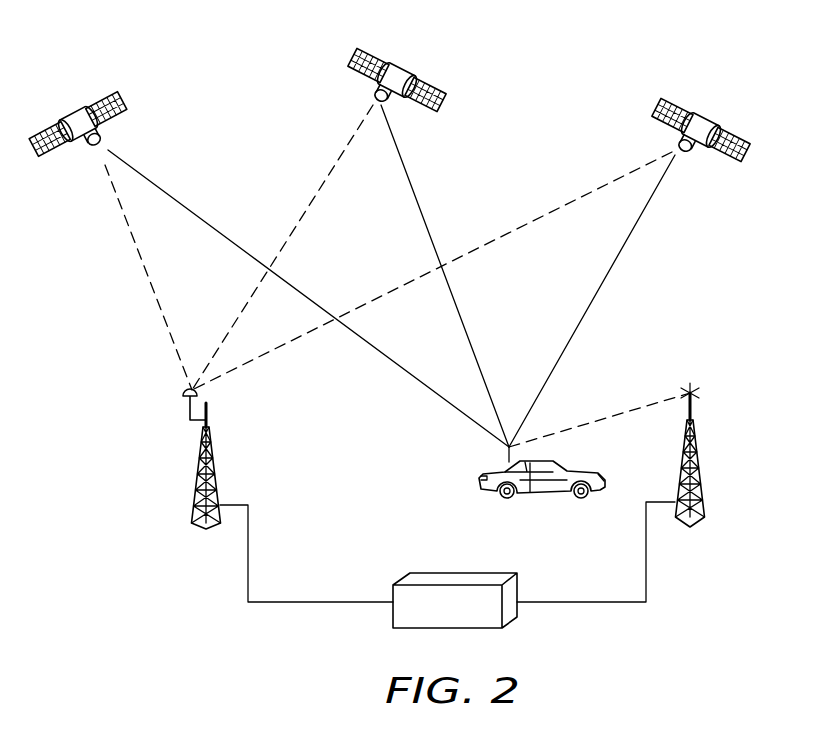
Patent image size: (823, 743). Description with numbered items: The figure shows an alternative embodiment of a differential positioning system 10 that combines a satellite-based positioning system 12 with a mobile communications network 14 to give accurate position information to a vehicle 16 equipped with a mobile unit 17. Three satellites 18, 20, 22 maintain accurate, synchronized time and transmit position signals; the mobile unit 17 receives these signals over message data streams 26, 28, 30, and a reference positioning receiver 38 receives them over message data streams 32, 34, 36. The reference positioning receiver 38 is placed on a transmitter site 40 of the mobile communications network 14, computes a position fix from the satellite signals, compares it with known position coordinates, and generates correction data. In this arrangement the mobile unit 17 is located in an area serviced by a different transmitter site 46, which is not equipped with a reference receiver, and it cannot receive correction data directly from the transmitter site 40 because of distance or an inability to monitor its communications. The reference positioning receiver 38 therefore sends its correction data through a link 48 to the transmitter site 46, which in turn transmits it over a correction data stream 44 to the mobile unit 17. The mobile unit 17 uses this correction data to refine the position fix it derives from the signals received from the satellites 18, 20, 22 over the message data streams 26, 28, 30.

The differential positioning system 10 is at (632, 34).
The satellite-based positioning system 12 is at (752, 251).
The mobile communications network 14 is at (138, 514).
The vehicle 16 is at (547, 495).
The mobile unit 17 is at (500, 463).
The satellite 18 is at (70, 119).
The satellite 20 is at (405, 73).
The satellite 22 is at (708, 122).
The message data stream 26 is at (148, 178).
The message data stream 28 is at (408, 175).
The message data stream 30 is at (641, 215).
The message data stream 32 is at (124, 214).
The message data stream 34 is at (343, 153).
The message data stream 36 is at (597, 188).
The reference positioning receiver 38 is at (182, 395).
The transmitter site 40 is at (198, 463).
The correction data stream 44 is at (628, 416).
The transmitter site 46 is at (698, 458).
The link 48 is at (463, 616).